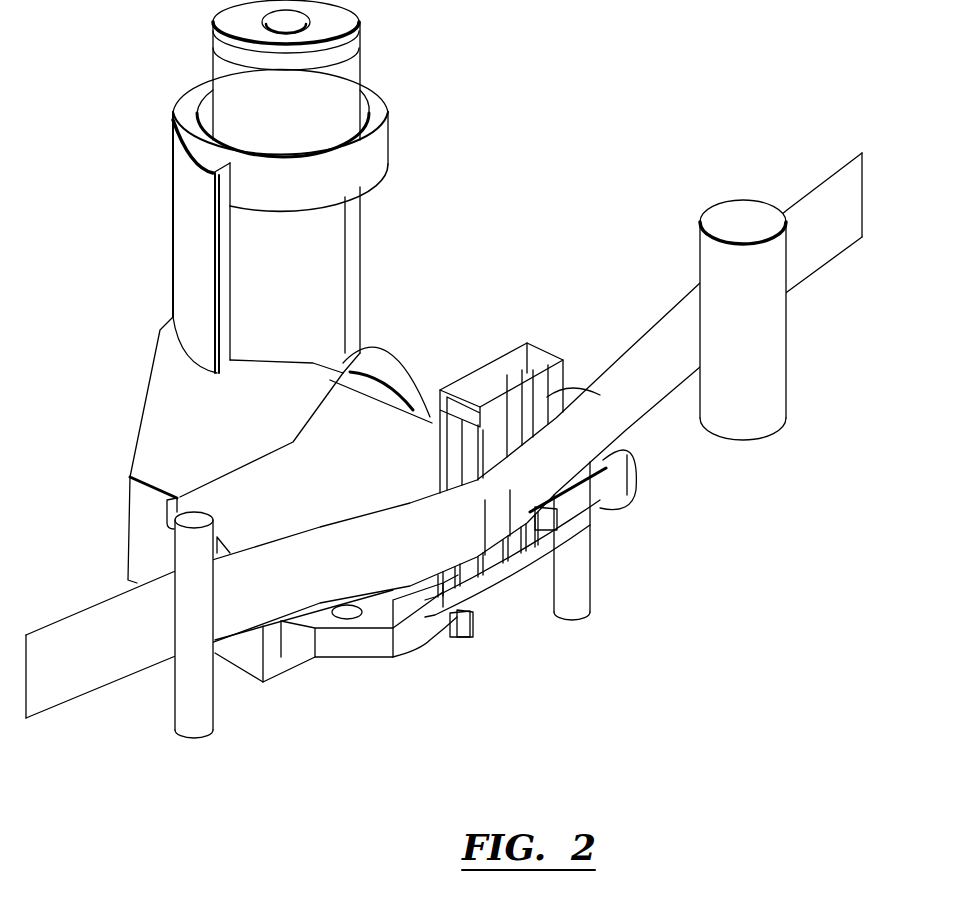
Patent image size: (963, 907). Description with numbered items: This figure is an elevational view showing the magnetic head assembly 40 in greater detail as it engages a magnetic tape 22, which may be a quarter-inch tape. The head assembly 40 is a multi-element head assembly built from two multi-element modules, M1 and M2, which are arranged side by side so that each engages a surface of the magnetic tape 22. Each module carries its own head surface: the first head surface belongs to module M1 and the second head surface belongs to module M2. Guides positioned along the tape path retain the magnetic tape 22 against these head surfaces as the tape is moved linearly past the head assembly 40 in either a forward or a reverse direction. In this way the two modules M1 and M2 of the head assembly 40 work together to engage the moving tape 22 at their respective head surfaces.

The magnetic tape 22 is at (653, 328).
The magnetic head assembly 40 is at (518, 337).
The multi-element module M1 is at (502, 560).
The multi-element module M2 is at (515, 565).